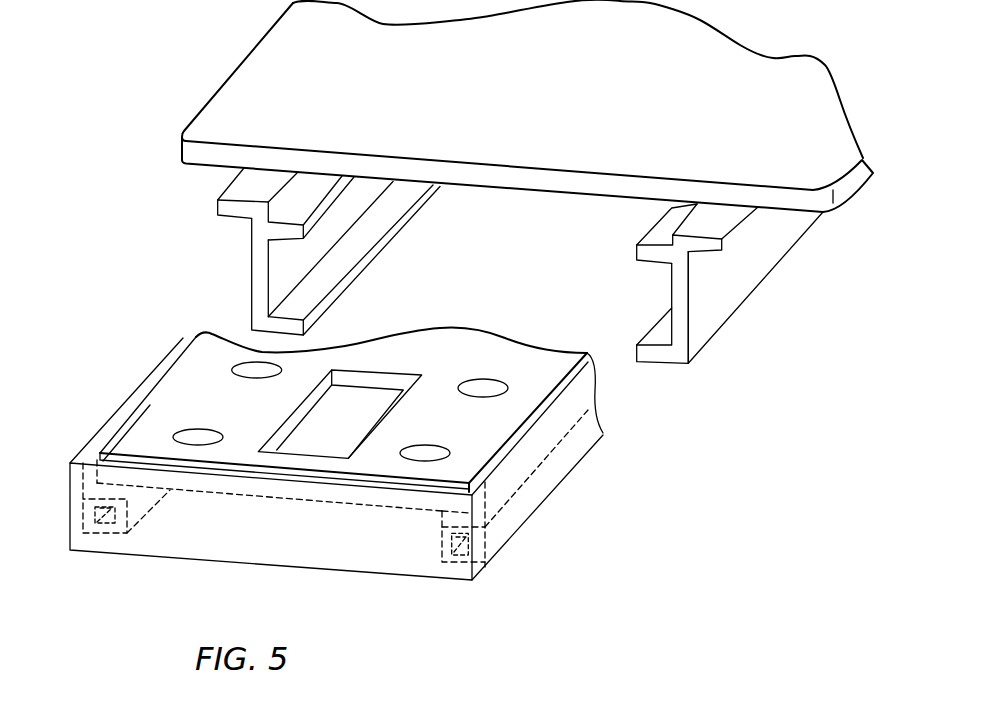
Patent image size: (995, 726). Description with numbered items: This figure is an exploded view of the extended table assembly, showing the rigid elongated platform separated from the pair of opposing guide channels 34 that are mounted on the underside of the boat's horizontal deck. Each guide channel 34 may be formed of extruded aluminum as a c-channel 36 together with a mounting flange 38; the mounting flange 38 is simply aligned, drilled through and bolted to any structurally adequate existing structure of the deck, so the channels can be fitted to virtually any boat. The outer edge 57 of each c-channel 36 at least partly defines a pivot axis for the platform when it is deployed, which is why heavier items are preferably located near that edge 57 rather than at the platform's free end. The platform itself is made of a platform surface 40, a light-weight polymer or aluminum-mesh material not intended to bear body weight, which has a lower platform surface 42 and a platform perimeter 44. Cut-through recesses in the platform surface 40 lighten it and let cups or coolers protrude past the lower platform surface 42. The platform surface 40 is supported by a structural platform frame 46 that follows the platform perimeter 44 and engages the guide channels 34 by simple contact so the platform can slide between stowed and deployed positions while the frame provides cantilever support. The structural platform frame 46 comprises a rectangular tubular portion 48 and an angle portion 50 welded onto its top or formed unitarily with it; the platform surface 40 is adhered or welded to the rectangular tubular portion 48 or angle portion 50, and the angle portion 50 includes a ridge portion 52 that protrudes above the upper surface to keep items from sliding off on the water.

The opposing guide channels 34 is at (488, 304).
The c-channel 36 is at (274, 327).
The mounting flange 38 is at (234, 210).
The edge of channel 57 is at (679, 313).
The platform surface 40 is at (167, 403).
The lower platform surface 42 is at (288, 506).
The platform perimeter 44 is at (412, 502).
The structural platform frame 46 is at (100, 548).
The rectangular tubular portion 48 is at (117, 533).
The angle portion 50 is at (88, 478).
The ridge portion 52 is at (113, 445).